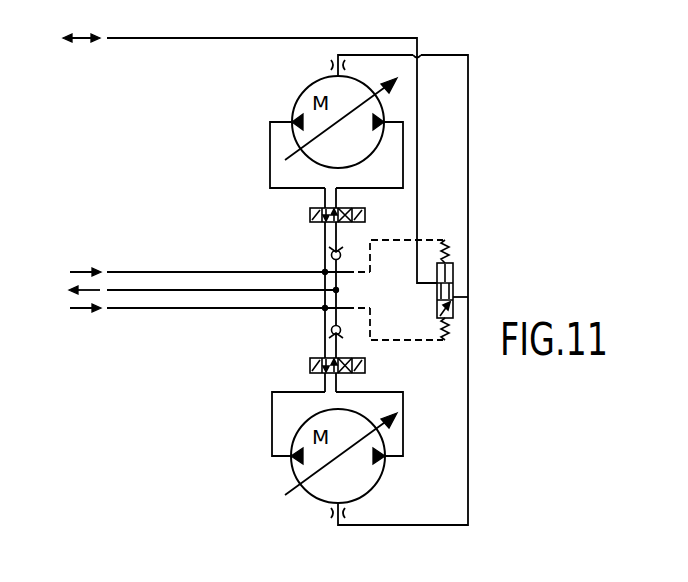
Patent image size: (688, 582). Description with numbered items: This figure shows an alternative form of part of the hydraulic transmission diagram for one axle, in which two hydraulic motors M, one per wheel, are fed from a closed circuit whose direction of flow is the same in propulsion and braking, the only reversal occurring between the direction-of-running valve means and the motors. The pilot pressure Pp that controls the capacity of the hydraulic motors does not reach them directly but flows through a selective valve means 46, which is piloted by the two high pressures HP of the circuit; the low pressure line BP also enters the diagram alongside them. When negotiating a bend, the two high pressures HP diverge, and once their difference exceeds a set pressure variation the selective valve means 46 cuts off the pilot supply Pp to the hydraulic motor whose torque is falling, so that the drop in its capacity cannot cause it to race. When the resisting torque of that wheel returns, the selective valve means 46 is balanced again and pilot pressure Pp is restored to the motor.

The selective valve means 46 is at (437, 292).
The pilot pressure Pp is at (235, 155).
The high pressure HP is at (206, 291).
The low pressure line BP is at (190, 291).